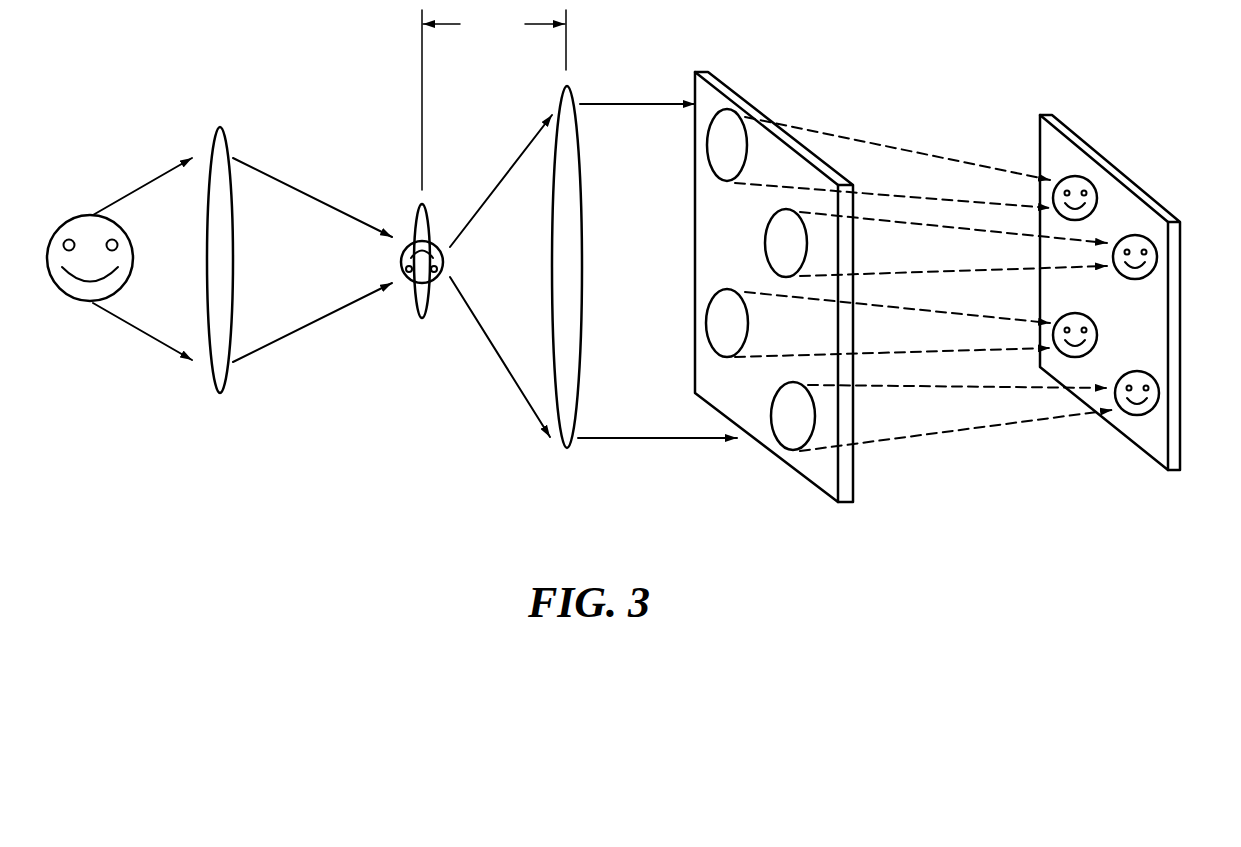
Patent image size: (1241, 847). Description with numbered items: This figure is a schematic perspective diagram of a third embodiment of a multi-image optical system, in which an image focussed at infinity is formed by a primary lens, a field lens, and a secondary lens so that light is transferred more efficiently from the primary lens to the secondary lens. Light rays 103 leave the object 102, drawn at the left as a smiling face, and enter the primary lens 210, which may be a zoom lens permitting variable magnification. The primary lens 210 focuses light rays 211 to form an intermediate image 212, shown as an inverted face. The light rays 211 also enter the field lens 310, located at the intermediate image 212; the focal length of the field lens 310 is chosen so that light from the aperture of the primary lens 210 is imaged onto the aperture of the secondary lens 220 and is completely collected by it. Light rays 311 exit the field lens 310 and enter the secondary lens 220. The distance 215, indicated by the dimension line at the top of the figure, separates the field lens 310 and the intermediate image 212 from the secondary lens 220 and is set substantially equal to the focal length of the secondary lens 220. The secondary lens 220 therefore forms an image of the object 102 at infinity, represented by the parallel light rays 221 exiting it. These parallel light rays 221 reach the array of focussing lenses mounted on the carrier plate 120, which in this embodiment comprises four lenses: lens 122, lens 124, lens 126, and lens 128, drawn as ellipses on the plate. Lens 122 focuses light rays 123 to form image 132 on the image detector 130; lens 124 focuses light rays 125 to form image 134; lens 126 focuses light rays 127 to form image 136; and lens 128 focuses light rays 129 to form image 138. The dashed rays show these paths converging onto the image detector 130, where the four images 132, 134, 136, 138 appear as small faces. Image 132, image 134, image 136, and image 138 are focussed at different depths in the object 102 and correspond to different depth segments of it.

The object 102 is at (79, 302).
The light rays 103 is at (140, 186).
The primary lens 210 is at (220, 394).
The light rays 211 is at (323, 200).
The distance 215 is at (494, 100).
The field lens 310 is at (422, 320).
The intermediate image 212 is at (444, 262).
The light rays 311 is at (493, 190).
The secondary lens 220 is at (566, 449).
The light rays 221 is at (628, 102).
The carrier plate 120 is at (848, 504).
The lens 122 is at (707, 148).
The lens 124 is at (766, 242).
The lens 126 is at (706, 325).
The lens 128 is at (772, 412).
The light rays 123 is at (880, 157).
The light rays 125 is at (912, 237).
The light rays 127 is at (892, 319).
The light rays 129 is at (907, 399).
The image detector 130 is at (1173, 472).
The image 132 is at (1097, 198).
The image 134 is at (1157, 257).
The image 136 is at (1097, 335).
The image 138 is at (1159, 393).